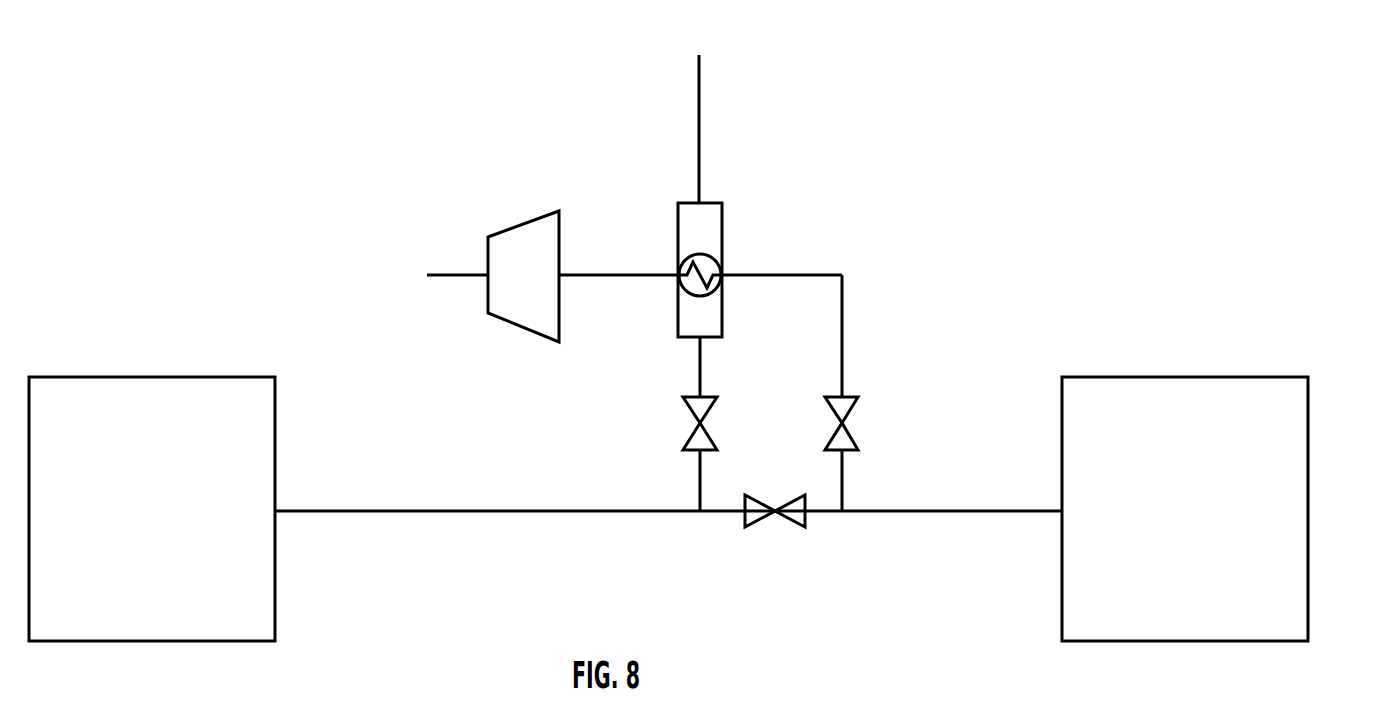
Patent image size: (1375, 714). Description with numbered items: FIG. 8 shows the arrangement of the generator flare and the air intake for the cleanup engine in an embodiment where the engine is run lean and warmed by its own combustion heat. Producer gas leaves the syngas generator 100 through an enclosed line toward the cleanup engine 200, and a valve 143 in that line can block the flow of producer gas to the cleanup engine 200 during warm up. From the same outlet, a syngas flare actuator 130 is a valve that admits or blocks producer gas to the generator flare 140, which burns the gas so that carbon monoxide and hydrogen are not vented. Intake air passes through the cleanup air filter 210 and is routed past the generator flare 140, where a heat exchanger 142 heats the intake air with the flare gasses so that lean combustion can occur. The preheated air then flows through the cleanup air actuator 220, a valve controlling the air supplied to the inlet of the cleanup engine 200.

The syngas generator 100 is at (165, 377).
The cleanup engine 200 is at (1308, 400).
The cleanup air filter 210 is at (559, 218).
The generator flare 140 is at (722, 208).
The heat exchanger 142 is at (714, 254).
The syngas flare actuator 130 is at (687, 405).
The cleanup air actuator 220 is at (853, 437).
The valve 143 is at (783, 517).